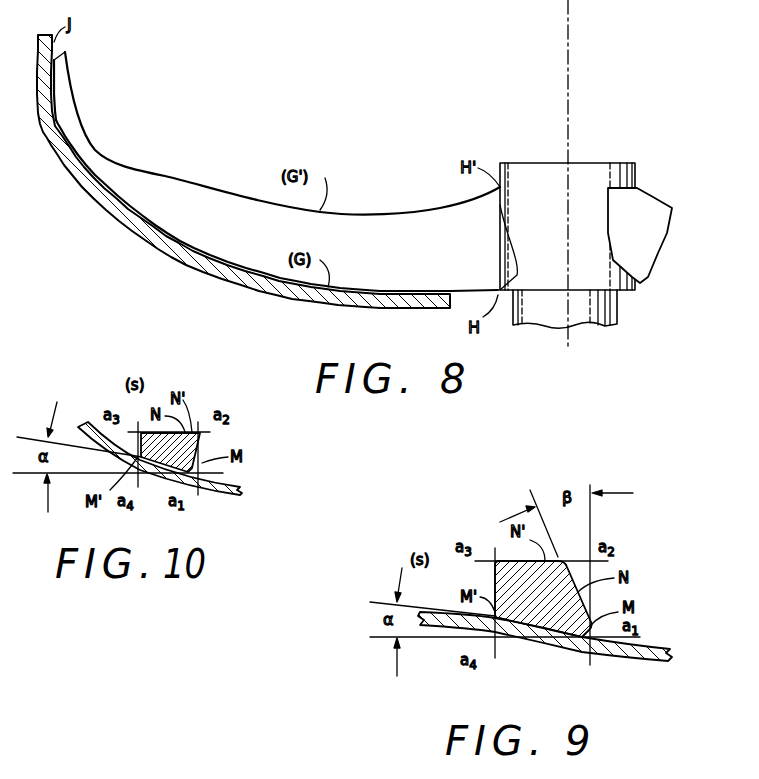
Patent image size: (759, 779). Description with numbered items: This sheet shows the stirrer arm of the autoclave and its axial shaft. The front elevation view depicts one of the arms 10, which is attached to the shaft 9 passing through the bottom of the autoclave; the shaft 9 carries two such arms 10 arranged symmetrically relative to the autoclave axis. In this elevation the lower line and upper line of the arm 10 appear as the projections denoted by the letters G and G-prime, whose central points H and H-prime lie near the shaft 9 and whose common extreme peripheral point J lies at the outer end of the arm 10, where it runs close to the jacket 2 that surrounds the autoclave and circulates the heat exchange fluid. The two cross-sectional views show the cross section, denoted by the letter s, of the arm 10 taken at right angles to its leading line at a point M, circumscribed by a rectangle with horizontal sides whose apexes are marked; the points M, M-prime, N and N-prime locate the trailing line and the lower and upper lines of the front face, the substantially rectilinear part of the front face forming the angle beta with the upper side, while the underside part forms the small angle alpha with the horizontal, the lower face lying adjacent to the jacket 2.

In FIG. 8, the jacket 2 is at (97, 200).
In FIG. 10, the jacket 2 is at (220, 493).
In FIG. 9, the jacket 2 is at (650, 653).
In FIG. 8, the shaft 9 is at (590, 172).
In FIG. 8, the arms 10 is at (165, 168).